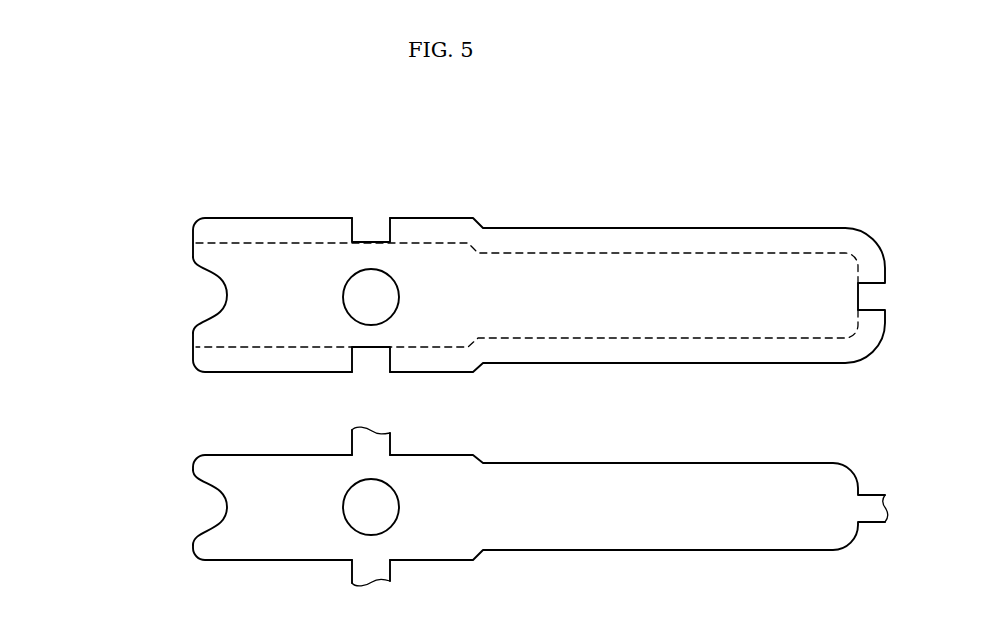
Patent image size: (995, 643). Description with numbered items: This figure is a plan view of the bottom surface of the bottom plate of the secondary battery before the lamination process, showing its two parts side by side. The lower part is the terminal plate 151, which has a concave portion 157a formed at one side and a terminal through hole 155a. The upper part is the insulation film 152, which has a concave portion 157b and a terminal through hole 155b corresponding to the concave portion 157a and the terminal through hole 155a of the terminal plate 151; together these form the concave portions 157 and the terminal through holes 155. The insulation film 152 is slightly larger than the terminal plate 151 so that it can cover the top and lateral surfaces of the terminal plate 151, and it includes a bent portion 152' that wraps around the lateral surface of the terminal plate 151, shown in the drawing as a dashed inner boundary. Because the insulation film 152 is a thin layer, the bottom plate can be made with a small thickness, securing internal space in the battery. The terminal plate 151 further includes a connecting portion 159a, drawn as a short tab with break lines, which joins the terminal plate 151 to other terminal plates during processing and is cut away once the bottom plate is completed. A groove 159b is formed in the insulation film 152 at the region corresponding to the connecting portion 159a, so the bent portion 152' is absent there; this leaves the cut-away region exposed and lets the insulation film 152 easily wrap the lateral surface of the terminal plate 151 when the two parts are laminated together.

The terminal plate 151 is at (674, 477).
The insulation film 152 is at (539, 328).
The bent portion 152' is at (527, 251).
The terminal through holes 155 is at (478, 402).
The terminal through hole 155a is at (384, 495).
The terminal through hole 155b is at (388, 299).
The concave portions 157 is at (128, 401).
The concave portion 157a is at (223, 507).
The concave portion 157b is at (223, 297).
The connecting portion 159a is at (357, 443).
The groove 159b is at (368, 232).